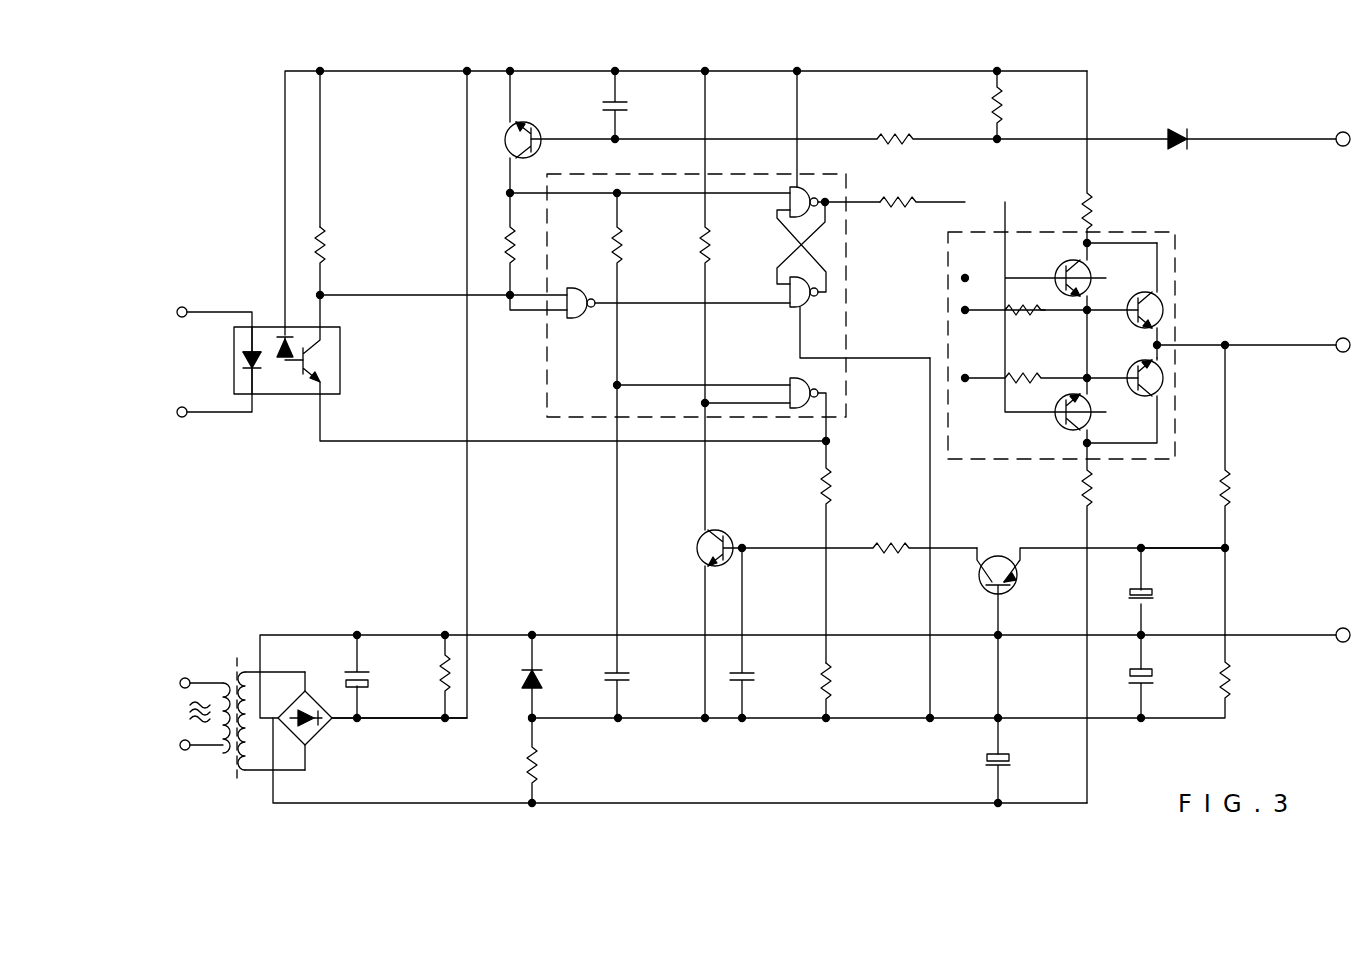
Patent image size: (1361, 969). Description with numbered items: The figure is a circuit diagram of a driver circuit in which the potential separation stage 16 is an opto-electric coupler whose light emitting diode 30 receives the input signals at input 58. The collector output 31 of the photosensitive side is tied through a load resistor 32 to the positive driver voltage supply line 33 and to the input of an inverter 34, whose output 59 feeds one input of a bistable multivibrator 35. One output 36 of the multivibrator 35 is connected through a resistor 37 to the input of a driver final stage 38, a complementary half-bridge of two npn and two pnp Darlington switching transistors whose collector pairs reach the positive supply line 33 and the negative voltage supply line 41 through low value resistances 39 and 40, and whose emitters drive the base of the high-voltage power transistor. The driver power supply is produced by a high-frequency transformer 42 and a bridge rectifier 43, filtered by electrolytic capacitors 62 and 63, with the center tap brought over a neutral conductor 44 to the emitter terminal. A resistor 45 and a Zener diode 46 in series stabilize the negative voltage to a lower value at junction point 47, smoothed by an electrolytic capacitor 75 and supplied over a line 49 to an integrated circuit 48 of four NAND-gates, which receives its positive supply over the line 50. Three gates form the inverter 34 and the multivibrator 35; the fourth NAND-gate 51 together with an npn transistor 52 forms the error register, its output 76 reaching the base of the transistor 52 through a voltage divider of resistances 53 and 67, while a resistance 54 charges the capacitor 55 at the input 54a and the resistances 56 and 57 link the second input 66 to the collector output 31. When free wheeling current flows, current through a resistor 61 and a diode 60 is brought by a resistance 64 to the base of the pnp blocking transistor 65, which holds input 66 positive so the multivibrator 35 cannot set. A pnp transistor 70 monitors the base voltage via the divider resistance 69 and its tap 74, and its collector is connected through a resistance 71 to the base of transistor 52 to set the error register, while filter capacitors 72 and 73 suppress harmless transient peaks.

The potential separation stage 16 is at (296, 396).
The light emitting diode 30 is at (266, 340).
The collector output 31 is at (330, 290).
The load resistor 32 is at (328, 246).
The positive driver voltage supply line 33 is at (284, 108).
The inverter 34 is at (570, 287).
The bistable multivibrator 35 is at (838, 248).
The output of the multivibrator 36 is at (832, 196).
The resistor 37 is at (903, 207).
The driver final stage 38 is at (1015, 232).
The low value resistance 39 is at (1094, 214).
The low value resistance 40 is at (1095, 492).
The negative voltage supply line 41 is at (1090, 770).
The high-frequency transformer 42 is at (228, 675).
The bridge rectifier 43 is at (318, 738).
The neutral conductor 44 is at (290, 633).
The resistor 45 is at (540, 768).
The Zener diode 46 is at (545, 678).
The junction point 47 is at (540, 714).
The integrated circuit 48 is at (848, 330).
The line 49 is at (933, 516).
The line 50 is at (798, 110).
The NAND-gate 51 is at (830, 383).
The npn transistor 52 is at (724, 530).
The resistance 53 is at (834, 482).
The resistance 54 is at (711, 250).
The input 54a is at (752, 383).
The capacitor 55 is at (636, 677).
The resistance 56 is at (624, 250).
The resistance 57 is at (506, 245).
The input 58 is at (188, 320).
The output of the inverter 59 is at (600, 306).
The diode 60 is at (1168, 128).
The resistor 61 is at (1005, 104).
The electrolytic capacitor 62 is at (370, 686).
The electrolytic capacitor 63 is at (985, 758).
The resistance 64 is at (905, 130).
The pnp blocking transistor 65 is at (527, 122).
The second input of the multivibrator 66 is at (728, 187).
The resistance 67 is at (836, 684).
The resistance 69 is at (1233, 680).
The pnp transistor 70 is at (1006, 556).
The resistor 71 is at (902, 542).
The filter capacitor 72 is at (1152, 594).
The filter capacitor 73 is at (754, 675).
The tap 74 is at (1233, 546).
The electrolytic capacitor 75 is at (1152, 670).
The output of the NAND-gate 76 is at (832, 442).